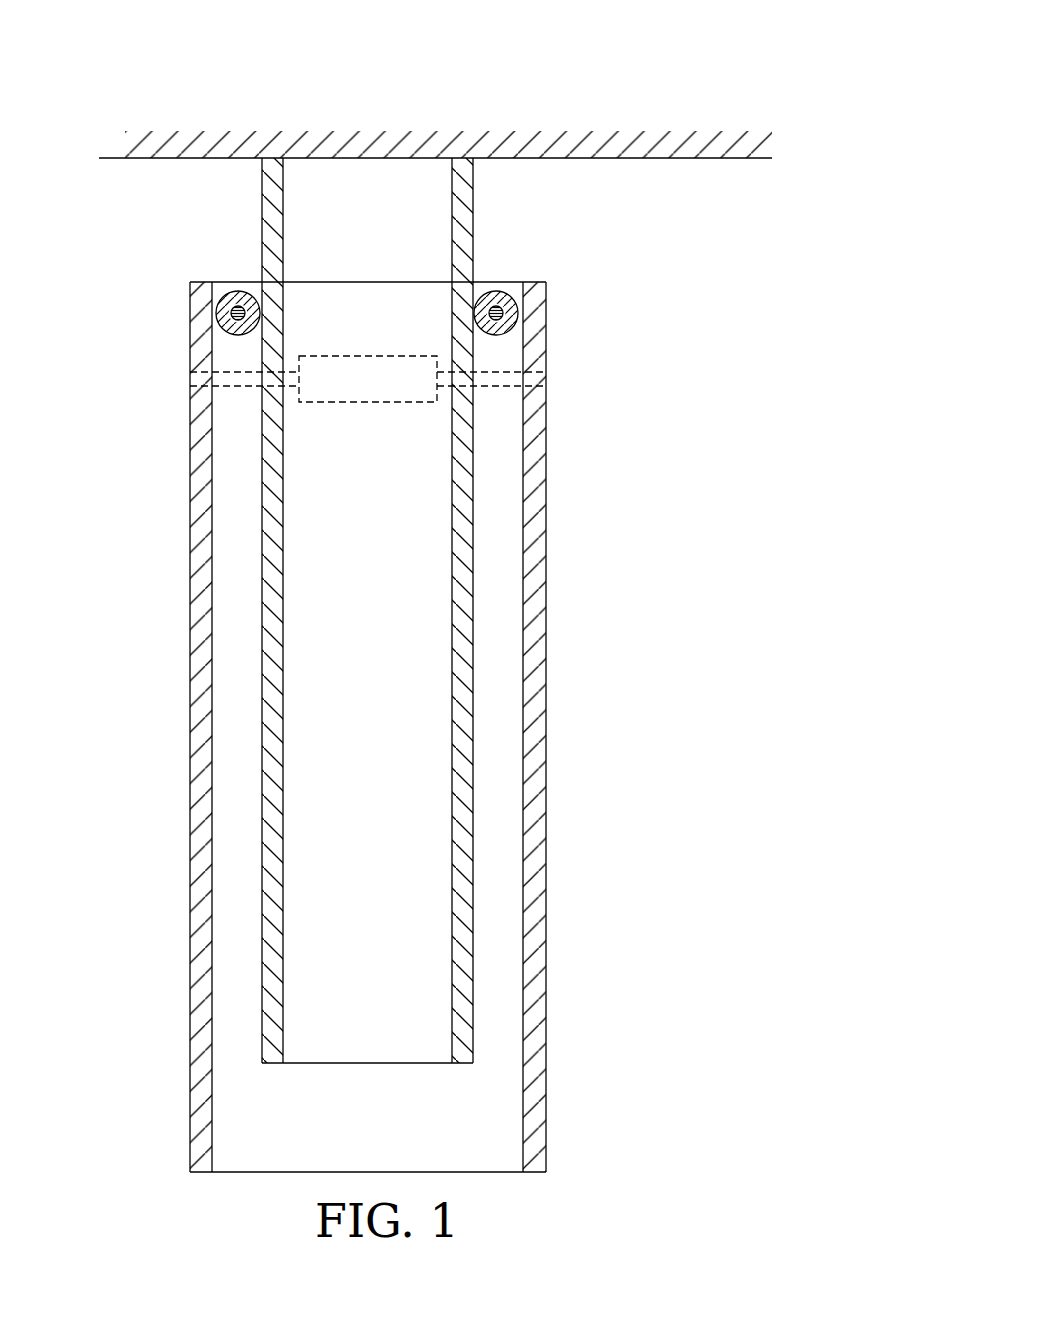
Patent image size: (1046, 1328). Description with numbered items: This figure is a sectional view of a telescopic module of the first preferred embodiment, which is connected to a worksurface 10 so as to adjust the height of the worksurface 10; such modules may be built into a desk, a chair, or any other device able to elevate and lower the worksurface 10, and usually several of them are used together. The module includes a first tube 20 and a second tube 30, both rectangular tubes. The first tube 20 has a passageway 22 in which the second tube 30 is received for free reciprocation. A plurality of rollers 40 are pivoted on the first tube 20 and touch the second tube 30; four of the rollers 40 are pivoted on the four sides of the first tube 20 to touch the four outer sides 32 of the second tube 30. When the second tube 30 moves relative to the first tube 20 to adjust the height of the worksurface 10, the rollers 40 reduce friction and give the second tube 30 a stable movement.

The worksurface 10 is at (567, 122).
The first tube 20 is at (552, 755).
The passageway 22 is at (228, 570).
The second tube 30 is at (480, 580).
The outer sides 32 is at (262, 750).
The rollers 40 is at (227, 303).